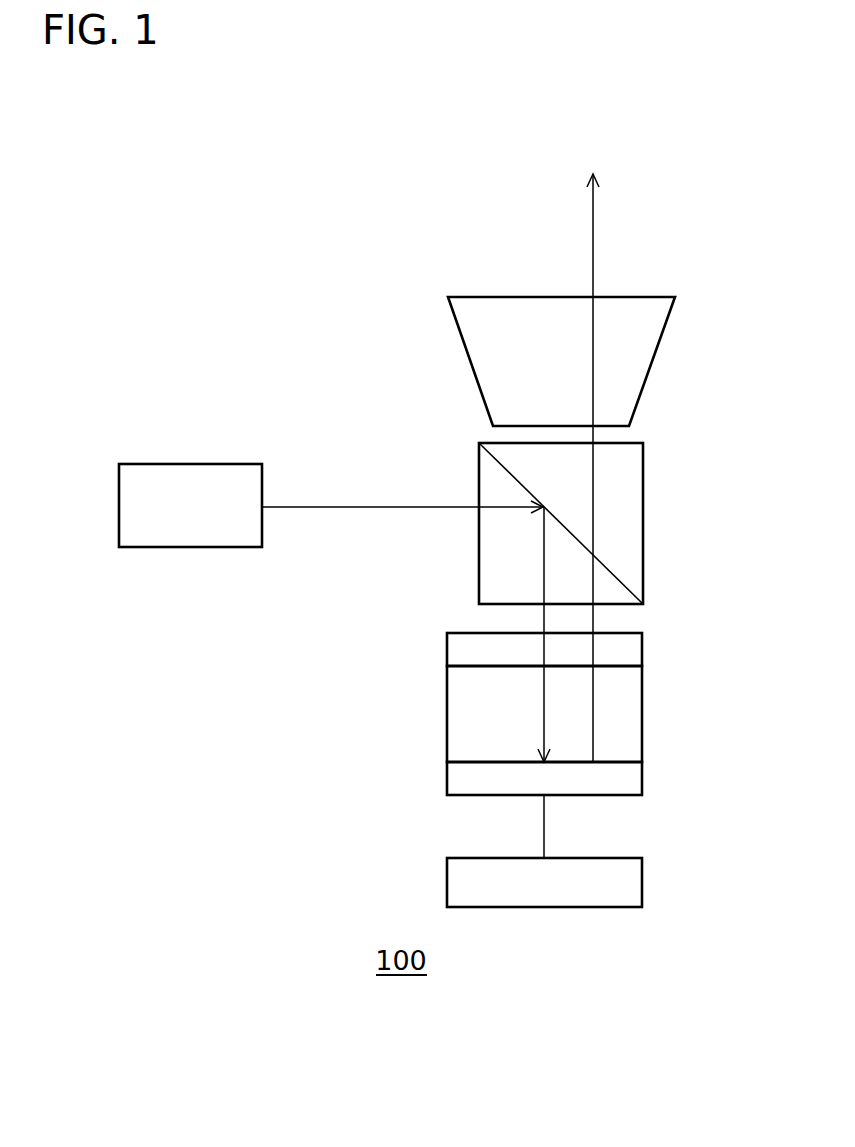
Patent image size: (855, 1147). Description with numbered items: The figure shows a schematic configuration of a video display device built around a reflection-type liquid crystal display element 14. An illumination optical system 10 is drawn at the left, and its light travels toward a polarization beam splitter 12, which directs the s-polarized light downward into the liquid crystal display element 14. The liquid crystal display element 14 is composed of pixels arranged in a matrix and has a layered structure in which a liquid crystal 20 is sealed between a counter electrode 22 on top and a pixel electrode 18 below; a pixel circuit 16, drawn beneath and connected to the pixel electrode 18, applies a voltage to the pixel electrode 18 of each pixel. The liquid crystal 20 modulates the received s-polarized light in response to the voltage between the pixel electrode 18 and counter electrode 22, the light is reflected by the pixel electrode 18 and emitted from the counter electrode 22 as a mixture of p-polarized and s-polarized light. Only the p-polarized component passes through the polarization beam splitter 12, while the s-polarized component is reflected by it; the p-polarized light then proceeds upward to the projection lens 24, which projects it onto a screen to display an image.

The illumination optical system 10 is at (195, 463).
The polarization beam splitter 12 is at (643, 574).
The liquid crystal display element 14 is at (614, 768).
The pixel circuit 16 is at (580, 882).
The pixel electrode 18 is at (642, 783).
The liquid crystal 20 is at (642, 715).
The counter electrode 22 is at (642, 656).
The projection lens 24 is at (641, 392).